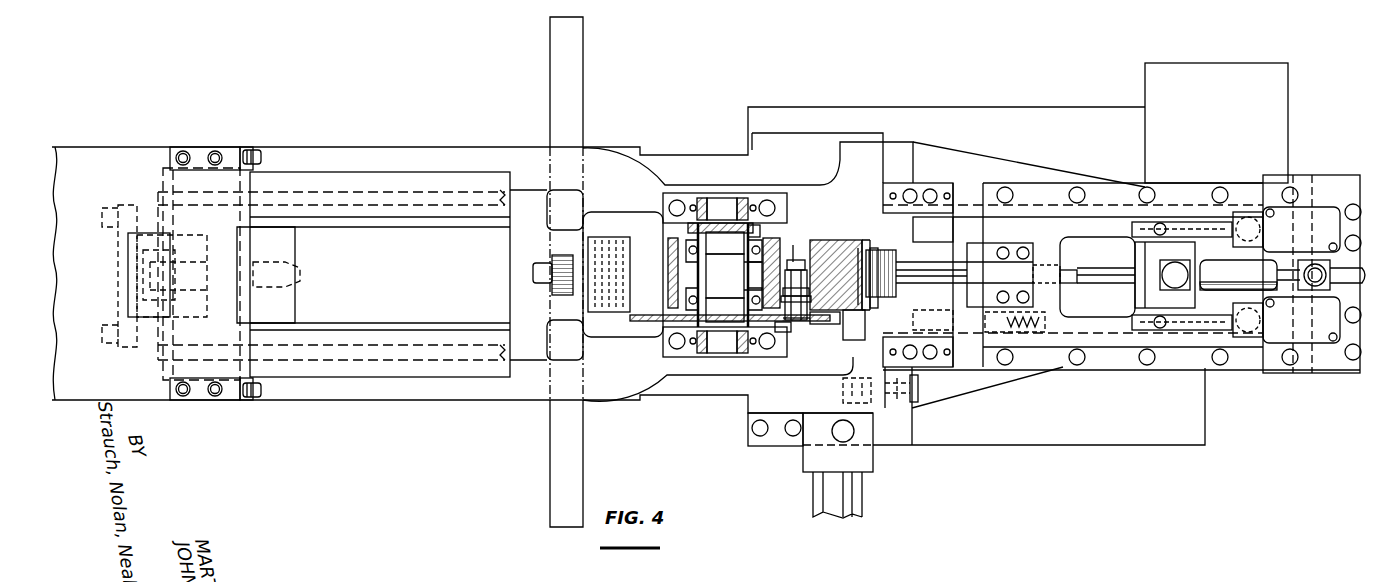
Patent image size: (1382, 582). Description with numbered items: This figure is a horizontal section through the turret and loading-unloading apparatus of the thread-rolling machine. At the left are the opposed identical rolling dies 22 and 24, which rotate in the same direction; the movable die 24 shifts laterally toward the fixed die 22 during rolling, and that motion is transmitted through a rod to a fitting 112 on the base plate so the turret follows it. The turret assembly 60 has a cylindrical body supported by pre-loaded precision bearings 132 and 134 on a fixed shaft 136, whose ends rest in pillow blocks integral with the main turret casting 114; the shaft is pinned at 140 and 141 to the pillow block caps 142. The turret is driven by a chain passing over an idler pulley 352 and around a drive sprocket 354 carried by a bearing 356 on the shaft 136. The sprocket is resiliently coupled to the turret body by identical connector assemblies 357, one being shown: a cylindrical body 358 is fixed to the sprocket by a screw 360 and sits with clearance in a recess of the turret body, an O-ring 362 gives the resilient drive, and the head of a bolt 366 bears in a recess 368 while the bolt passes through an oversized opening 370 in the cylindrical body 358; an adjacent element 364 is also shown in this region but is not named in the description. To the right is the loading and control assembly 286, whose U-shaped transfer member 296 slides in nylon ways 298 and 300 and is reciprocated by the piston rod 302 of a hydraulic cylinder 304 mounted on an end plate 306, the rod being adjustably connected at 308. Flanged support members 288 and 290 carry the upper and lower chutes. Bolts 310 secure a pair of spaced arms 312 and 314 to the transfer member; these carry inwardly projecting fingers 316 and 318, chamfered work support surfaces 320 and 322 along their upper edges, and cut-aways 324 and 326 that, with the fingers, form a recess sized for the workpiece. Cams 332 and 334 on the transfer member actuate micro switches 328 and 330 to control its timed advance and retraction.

The movable die 24 is at (542, 74).
The die 22 is at (548, 462).
The pillow block caps 142 is at (686, 205).
The pin 140 is at (728, 200).
The pin 141 is at (720, 353).
The main turret casting 114 is at (760, 349).
The bearing 356 is at (758, 352).
The pre-loaded precision bearing 132 is at (744, 245).
The fixed shaft 136 is at (692, 270).
The pre-loaded precision bearing 134 is at (744, 298).
The O-ring 362 is at (770, 286).
The cylindrical body 358 is at (773, 273).
The collar 364 is at (790, 255).
The recess 368 is at (793, 262).
The bolt 366 is at (821, 295).
The oversized opening 370 is at (820, 274).
The connector assemblies 357 is at (819, 296).
The finger 318 is at (819, 311).
The turret assembly 60 is at (828, 226).
The arm 312 is at (858, 248).
The finger 316 is at (878, 248).
The screw 360 is at (792, 331).
The drive sprocket 354 is at (814, 336).
The idler pulley 352 is at (848, 356).
The cut-away 326 is at (916, 273).
The cut-away 324 is at (910, 255).
The flanged support member 290 is at (950, 192).
The arm 314 is at (916, 348).
The loading and control assembly 286 is at (1005, 234).
The nylon way 298 is at (1097, 188).
The nylon way 300 is at (1112, 368).
The flanged support member 288 is at (950, 360).
The chamfered work support surface 320 is at (1000, 274).
The chamfered work support surface 322 is at (998, 273).
The bolts 310 is at (1026, 283).
The U-shaped transfer member 296 is at (1068, 315).
The adjustable connection 308 is at (1063, 270).
The piston rod 302 is at (1135, 272).
The hydraulic cylinder 304 is at (1195, 303).
The micro switch 328 is at (1243, 212).
The micro switch 330 is at (1245, 340).
The cam 334 is at (1165, 225).
The cam 332 is at (1175, 330).
The end plate 306 is at (1365, 350).
The fitting 112 is at (873, 455).